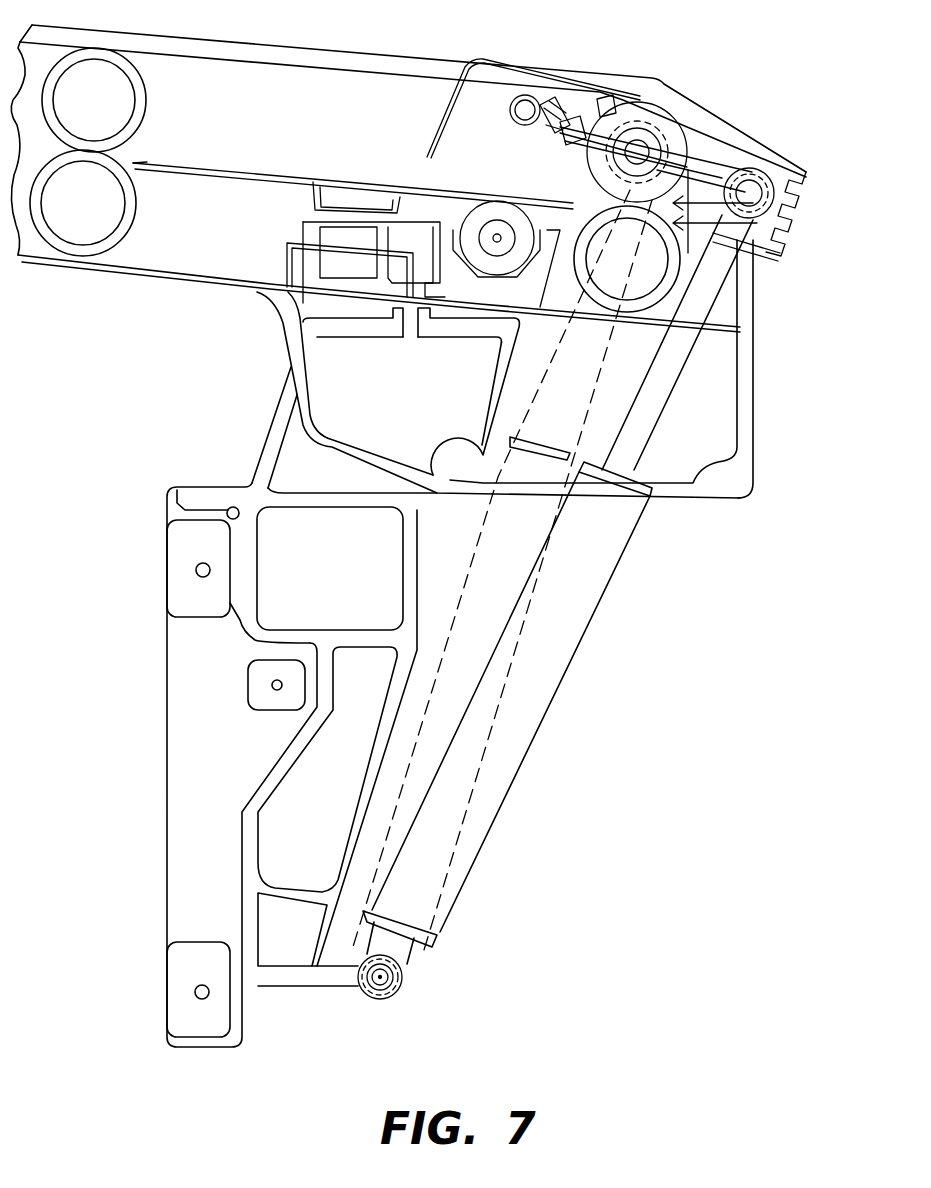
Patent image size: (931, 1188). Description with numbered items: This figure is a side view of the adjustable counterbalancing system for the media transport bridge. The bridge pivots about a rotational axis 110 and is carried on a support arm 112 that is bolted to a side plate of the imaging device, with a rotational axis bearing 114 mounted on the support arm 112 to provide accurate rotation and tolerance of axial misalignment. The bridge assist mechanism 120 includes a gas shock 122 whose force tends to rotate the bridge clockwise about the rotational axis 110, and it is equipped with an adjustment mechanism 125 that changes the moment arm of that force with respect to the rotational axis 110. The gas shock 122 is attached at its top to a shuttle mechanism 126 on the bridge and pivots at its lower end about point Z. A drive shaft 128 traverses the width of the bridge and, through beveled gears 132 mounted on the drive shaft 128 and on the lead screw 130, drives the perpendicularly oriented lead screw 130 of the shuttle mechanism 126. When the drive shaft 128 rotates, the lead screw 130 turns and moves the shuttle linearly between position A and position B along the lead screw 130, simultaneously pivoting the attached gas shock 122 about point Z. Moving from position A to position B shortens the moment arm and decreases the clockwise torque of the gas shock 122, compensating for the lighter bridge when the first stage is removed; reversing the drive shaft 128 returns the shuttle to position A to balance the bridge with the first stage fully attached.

The rotational axis 110 is at (497, 238).
The rotational axis bearing 114 is at (495, 207).
The drive shaft 128 is at (522, 96).
The beveled gears 132 is at (560, 104).
The lead screw 130 is at (575, 126).
The position B is at (641, 138).
The adjustment mechanism 125 is at (712, 112).
The position A is at (760, 172).
The shuttle mechanism 126 is at (767, 183).
The support arm 112 is at (175, 507).
The bridge assist mechanism 120 is at (665, 585).
The gas shock 122 is at (535, 677).
The point Z is at (380, 977).